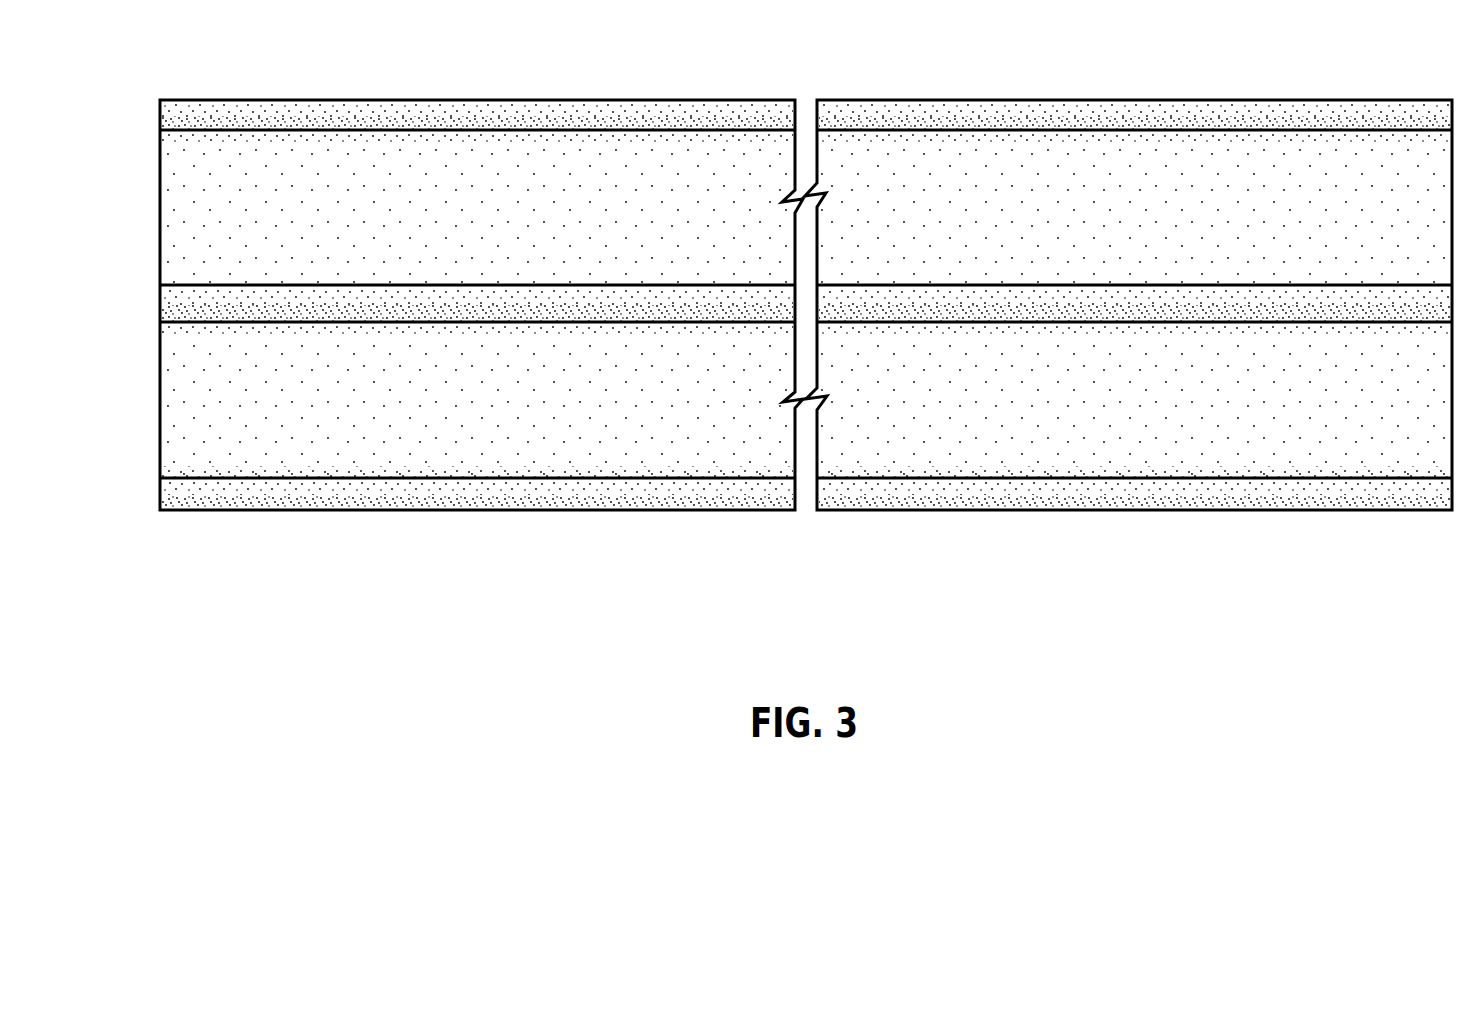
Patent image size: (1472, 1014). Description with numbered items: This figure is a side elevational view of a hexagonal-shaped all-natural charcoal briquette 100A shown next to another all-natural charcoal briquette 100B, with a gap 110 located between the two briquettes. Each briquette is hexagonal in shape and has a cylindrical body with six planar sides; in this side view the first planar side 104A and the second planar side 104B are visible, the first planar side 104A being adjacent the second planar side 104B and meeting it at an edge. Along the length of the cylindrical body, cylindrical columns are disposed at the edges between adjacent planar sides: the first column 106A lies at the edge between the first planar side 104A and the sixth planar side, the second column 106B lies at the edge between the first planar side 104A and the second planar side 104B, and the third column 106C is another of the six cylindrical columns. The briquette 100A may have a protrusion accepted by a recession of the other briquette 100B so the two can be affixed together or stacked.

The all-natural charcoal briquette 100A is at (803, 577).
The other all-natural charcoal briquette 100B is at (1471, 580).
The first planar side 104A is at (405, 165).
The second planar side 104B is at (648, 441).
The first column 106A is at (284, 116).
The second column 106B is at (203, 315).
The third column 106C is at (192, 497).
The gap 110 is at (840, 78).